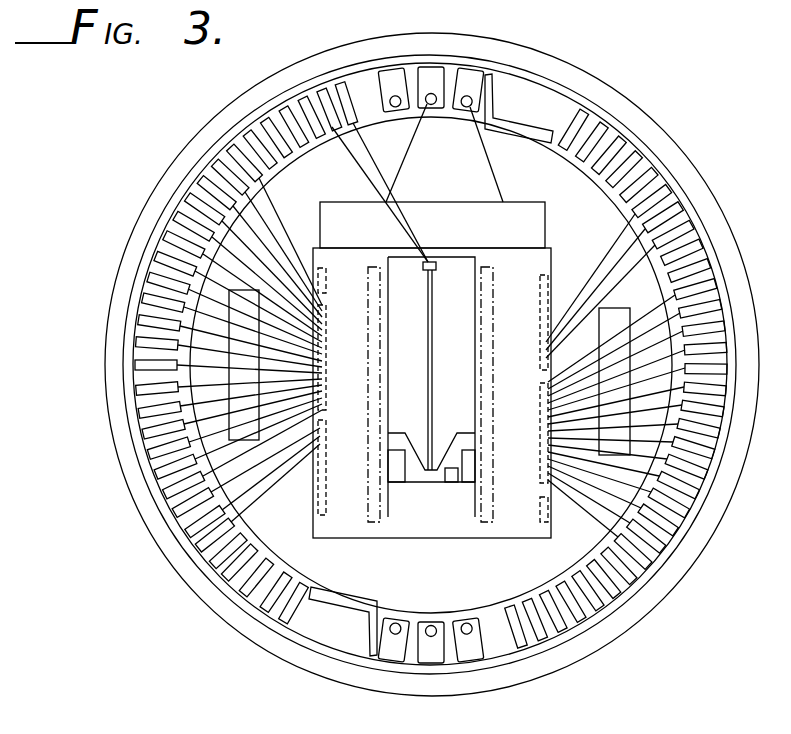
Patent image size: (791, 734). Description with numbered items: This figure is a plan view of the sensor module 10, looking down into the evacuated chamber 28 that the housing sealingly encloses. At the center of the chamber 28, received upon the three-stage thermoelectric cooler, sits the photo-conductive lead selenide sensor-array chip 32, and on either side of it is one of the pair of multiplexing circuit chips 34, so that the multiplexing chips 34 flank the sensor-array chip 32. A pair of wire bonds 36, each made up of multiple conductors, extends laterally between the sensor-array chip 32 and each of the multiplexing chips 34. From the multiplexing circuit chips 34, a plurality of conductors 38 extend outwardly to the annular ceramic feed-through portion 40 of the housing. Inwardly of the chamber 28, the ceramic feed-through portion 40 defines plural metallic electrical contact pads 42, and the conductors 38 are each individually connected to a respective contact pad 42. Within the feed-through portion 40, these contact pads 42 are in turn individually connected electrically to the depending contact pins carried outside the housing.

The sensor module 10 is at (590, 676).
The evacuated chamber 28 is at (446, 596).
The sensor-array chip 32 is at (430, 497).
The multiplexing circuit chips 34 is at (342, 510).
The wire bonds 36 is at (366, 305).
The conductors 38 is at (195, 363).
The ceramic feed-through portion 40 is at (563, 112).
The contact pads 42 is at (640, 180).